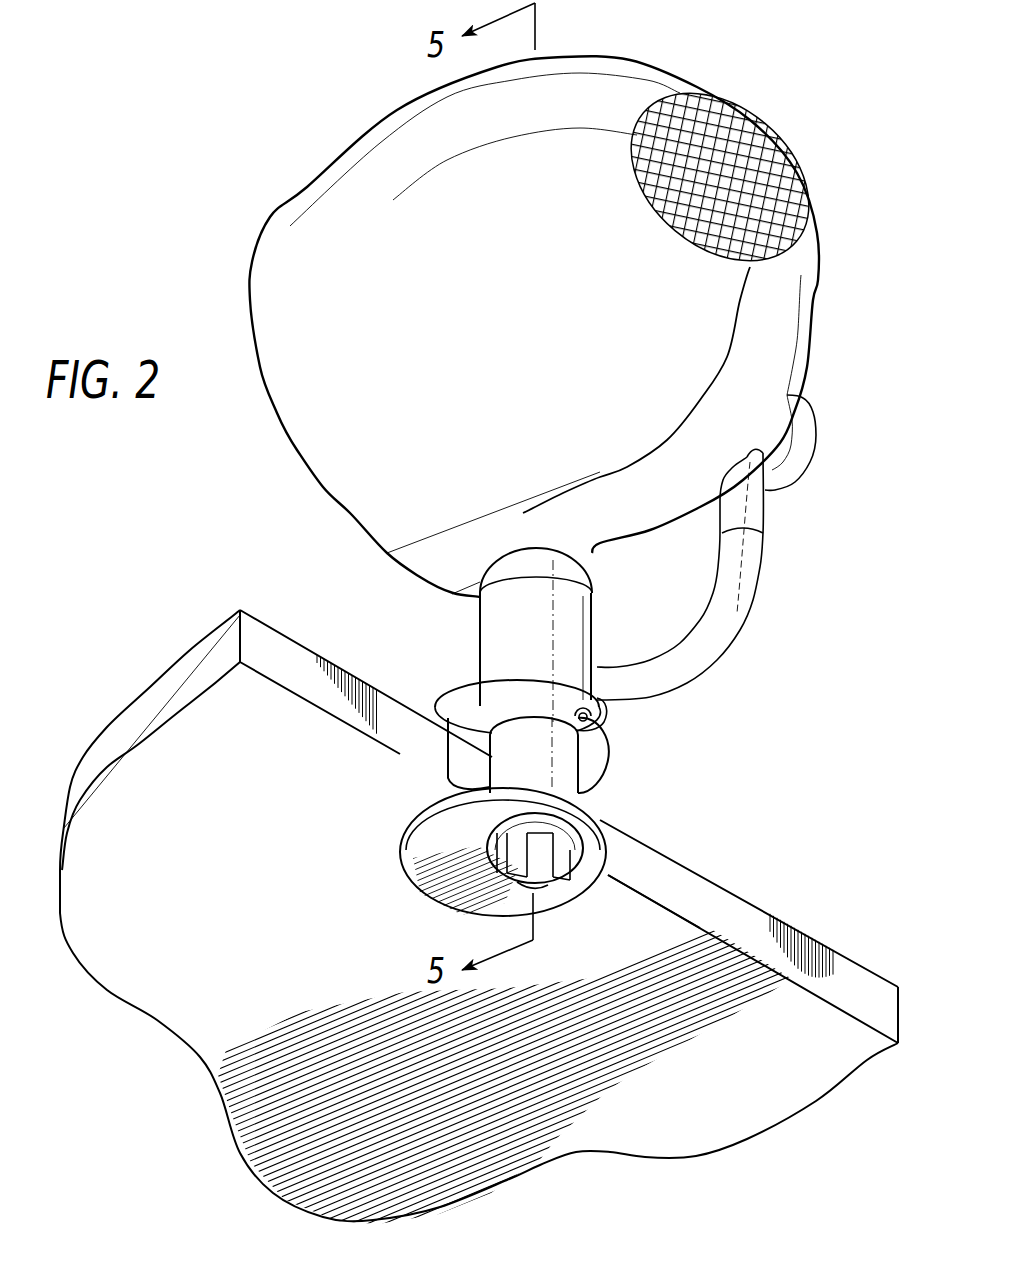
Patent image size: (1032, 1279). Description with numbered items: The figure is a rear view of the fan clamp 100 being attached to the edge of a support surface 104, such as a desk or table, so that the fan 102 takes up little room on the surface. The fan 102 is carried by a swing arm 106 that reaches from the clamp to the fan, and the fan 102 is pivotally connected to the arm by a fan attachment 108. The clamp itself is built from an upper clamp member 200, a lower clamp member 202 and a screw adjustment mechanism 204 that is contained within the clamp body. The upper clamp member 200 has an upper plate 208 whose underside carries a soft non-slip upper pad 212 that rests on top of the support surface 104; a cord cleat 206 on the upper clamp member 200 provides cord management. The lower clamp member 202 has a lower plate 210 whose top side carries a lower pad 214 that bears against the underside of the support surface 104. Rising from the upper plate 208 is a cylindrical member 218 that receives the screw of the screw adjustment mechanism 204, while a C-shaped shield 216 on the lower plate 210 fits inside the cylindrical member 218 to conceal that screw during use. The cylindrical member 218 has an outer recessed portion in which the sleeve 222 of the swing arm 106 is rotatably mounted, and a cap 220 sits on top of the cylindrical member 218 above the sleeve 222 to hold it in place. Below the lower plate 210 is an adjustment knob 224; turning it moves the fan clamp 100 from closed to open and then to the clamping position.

The fan clamp 100 is at (393, 628).
The fan 102 is at (345, 193).
The support surface 104 is at (213, 826).
The swing arm 106 is at (740, 630).
The fan attachment 108 is at (815, 427).
The upper clamp member 200 is at (615, 750).
The lower clamp member 202 is at (624, 856).
The screw adjustment mechanism 204 is at (580, 915).
The cord cleat 206 is at (585, 678).
The upper plate 208 is at (458, 707).
The lower plate 210 is at (400, 868).
The upper pad 212 is at (470, 733).
The lower pad 214 is at (413, 811).
The shield 216 is at (563, 792).
The cylindrical member 218 is at (527, 690).
The cap 220 is at (523, 547).
The sleeve 222 is at (577, 627).
The adjustment knob 224 is at (520, 878).